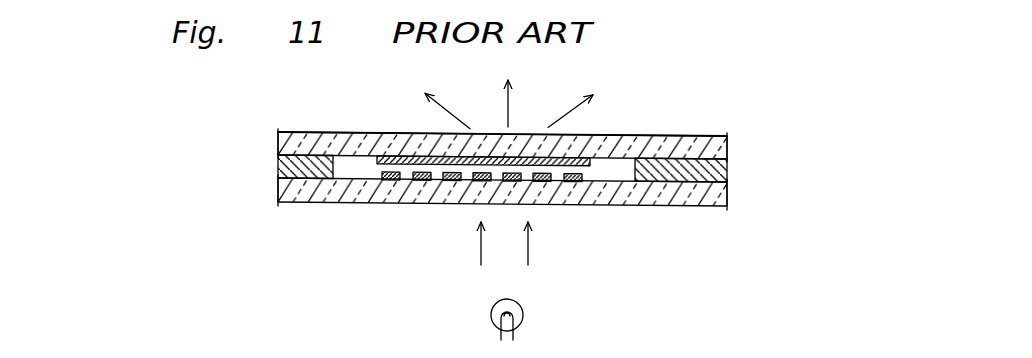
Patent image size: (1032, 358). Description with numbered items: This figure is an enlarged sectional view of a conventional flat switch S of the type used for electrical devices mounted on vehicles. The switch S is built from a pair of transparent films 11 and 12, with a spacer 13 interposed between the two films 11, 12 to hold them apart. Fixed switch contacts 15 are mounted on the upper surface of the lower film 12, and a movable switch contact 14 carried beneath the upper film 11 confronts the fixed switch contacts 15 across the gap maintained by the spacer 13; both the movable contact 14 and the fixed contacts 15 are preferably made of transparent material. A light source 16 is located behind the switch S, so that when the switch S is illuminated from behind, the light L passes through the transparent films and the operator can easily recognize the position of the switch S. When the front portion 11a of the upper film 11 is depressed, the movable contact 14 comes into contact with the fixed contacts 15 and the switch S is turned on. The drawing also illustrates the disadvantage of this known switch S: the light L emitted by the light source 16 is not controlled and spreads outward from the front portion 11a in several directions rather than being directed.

The transparent film 11 is at (290, 143).
The front portion 11a is at (527, 133).
The transparent film 12 is at (288, 190).
The spacer 13 is at (288, 167).
The movable switch contact 14 is at (395, 157).
The fixed switch contacts 15 is at (420, 182).
The light source 16 is at (492, 316).
The flat switch S is at (483, 160).
The light L is at (519, 253).